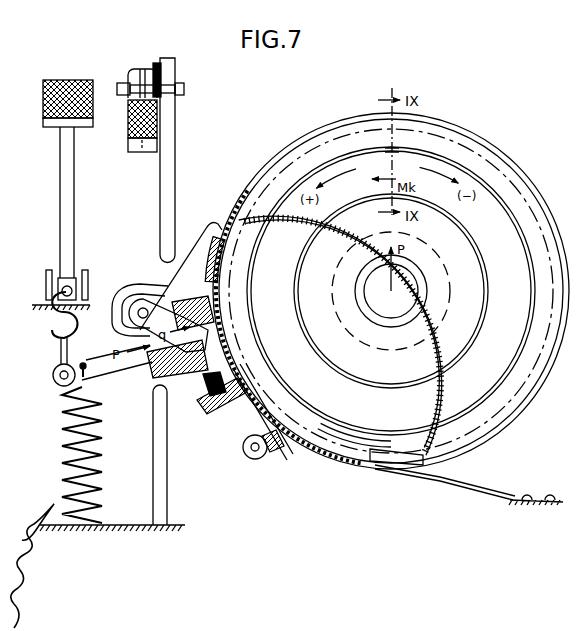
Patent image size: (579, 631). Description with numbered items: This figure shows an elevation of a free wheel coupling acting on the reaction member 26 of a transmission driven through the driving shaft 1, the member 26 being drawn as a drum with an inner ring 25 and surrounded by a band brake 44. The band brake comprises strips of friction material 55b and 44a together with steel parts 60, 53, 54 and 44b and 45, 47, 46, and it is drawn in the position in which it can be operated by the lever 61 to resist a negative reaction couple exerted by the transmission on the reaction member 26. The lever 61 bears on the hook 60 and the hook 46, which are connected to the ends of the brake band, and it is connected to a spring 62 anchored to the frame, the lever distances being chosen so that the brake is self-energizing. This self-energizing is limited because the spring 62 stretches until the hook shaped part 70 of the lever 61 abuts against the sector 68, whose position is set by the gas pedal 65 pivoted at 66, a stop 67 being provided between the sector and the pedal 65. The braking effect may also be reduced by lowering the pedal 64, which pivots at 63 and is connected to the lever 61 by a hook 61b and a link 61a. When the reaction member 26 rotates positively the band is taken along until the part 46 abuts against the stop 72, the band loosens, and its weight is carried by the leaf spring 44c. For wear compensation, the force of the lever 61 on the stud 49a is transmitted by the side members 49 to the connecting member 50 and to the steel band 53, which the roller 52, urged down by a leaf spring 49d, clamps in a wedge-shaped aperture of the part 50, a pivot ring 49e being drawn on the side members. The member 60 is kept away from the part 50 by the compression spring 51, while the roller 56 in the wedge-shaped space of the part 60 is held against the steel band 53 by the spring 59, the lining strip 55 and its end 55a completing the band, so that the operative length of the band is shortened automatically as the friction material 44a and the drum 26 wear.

The driving shaft 1 is at (391, 291).
The brake drum 25 is at (430, 142).
The reaction member 26 is at (480, 152).
The brake band 44 is at (349, 118).
The friction material 44a is at (252, 187).
The steel part of brake band 44b is at (238, 192).
The leaf spring 44c is at (468, 484).
The steel part of brake band 45 is at (215, 227).
The hook 46 is at (147, 374).
The steel part of brake band 47 is at (206, 243).
The side members 49 is at (143, 328).
The stud 49a is at (143, 308).
The leaf spring 49d is at (250, 460).
The lever pivot ring 49e is at (243, 446).
The connecting member 50 is at (255, 459).
The compression spring 51 is at (248, 422).
The roller 52 is at (287, 412).
The steel band 53 is at (280, 452).
The steel part of brake band 54 is at (327, 467).
The lining strip 55 is at (248, 362).
The lining strip end 55a is at (267, 398).
The friction material 55b is at (237, 333).
The roller 56 is at (208, 403).
The spring 59 is at (205, 397).
The hook 60 is at (200, 304).
The lever 61 is at (99, 372).
The link 61a is at (75, 362).
The hook 61b is at (58, 332).
The spring 62 is at (62, 466).
The pivot 63 is at (46, 281).
The pedal 64 is at (60, 208).
The gas pedal 65 is at (132, 138).
The pivot 66 is at (185, 90).
The stop 67 is at (157, 63).
The sector 68 is at (176, 131).
The hook shaped part 70 is at (125, 300).
The stop 72 is at (162, 502).